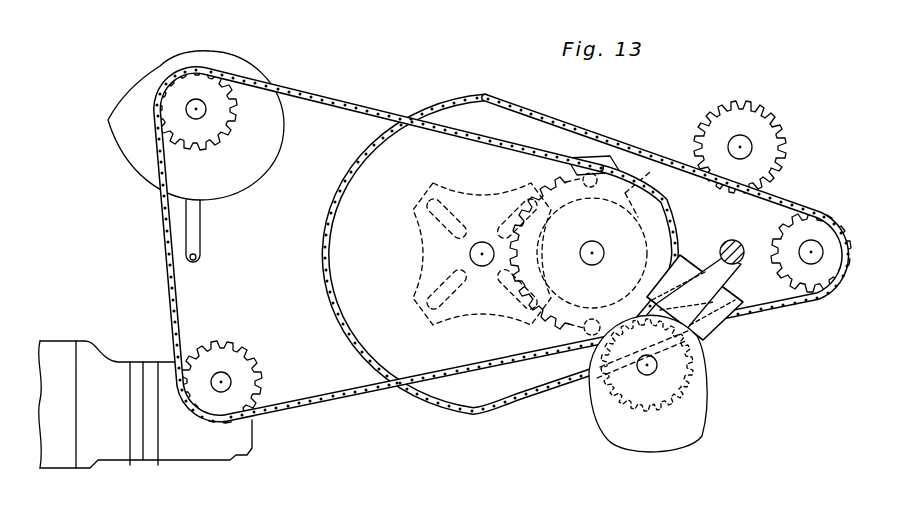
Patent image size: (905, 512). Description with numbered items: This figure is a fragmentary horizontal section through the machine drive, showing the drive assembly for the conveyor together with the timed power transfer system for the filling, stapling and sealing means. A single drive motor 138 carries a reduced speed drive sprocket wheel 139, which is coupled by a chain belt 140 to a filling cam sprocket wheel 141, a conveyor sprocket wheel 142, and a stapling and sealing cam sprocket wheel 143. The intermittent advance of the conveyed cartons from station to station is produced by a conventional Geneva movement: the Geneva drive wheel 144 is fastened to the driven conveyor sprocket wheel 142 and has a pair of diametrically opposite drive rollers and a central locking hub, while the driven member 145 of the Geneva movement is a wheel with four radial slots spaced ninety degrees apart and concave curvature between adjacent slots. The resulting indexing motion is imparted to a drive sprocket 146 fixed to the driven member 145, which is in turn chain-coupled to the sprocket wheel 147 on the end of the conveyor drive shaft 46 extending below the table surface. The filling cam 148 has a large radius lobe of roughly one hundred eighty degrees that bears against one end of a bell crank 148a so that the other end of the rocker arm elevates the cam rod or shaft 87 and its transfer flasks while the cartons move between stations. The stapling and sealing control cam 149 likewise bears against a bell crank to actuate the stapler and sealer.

The drive motor 138 is at (109, 421).
The reduced speed drive sprocket wheel 139 is at (248, 367).
The chain belt 140 is at (304, 400).
The filling cam sprocket wheel 141 is at (196, 125).
The conveyor sprocket wheel 142 is at (540, 188).
The stapling and sealing cam sprocket wheel 143 is at (690, 364).
The Geneva drive wheel 144 is at (648, 177).
The driven member of the Geneva movement 145 is at (460, 322).
The drive sprocket 146 is at (487, 400).
The sprocket wheel 147 is at (811, 278).
The filling cam 148 is at (255, 175).
The bell crank 148a is at (206, 242).
The cam rod or shaft 87 is at (204, 262).
The stapling and sealing control cam 149 is at (697, 407).
The sprocket shaft 46 is at (813, 247).